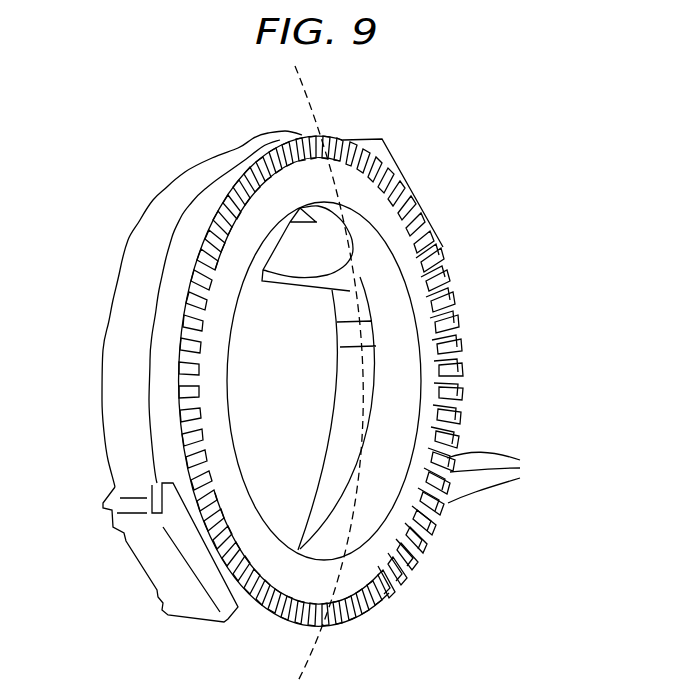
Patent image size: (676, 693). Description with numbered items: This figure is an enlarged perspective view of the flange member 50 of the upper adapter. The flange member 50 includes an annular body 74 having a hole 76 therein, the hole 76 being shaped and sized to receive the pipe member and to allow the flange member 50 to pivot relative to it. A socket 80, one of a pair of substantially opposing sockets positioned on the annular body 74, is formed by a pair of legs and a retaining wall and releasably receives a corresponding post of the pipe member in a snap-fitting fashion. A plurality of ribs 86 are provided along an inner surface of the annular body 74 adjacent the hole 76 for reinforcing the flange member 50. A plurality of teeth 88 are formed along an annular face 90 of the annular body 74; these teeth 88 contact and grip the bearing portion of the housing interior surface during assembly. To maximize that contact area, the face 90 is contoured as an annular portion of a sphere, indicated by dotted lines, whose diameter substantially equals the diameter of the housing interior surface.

The flange member 50 is at (458, 156).
The annular body 74 is at (166, 227).
The hole 76 is at (303, 500).
The socket 80 is at (327, 243).
The rib 86 is at (350, 333).
The teeth 88 is at (498, 477).
The annular face 90 is at (207, 390).